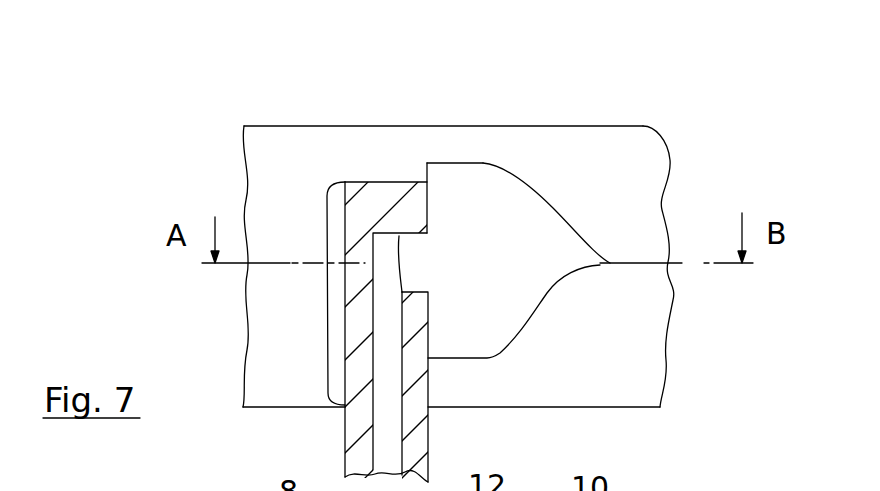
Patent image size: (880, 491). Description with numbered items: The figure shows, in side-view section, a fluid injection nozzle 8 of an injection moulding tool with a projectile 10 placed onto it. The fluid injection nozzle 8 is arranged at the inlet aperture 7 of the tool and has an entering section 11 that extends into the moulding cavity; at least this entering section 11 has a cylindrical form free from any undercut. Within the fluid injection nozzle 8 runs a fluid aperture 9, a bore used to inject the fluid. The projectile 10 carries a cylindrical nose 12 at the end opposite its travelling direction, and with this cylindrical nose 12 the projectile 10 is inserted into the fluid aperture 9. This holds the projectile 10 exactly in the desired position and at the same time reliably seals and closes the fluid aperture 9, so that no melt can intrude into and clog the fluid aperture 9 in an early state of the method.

The inlet aperture 7 is at (434, 412).
The fluid injection nozzle 8 is at (347, 448).
The fluid aperture 9 is at (418, 289).
The projectile 10 is at (518, 217).
The entering section 11 is at (326, 276).
The cylindrical nose 12 is at (408, 262).